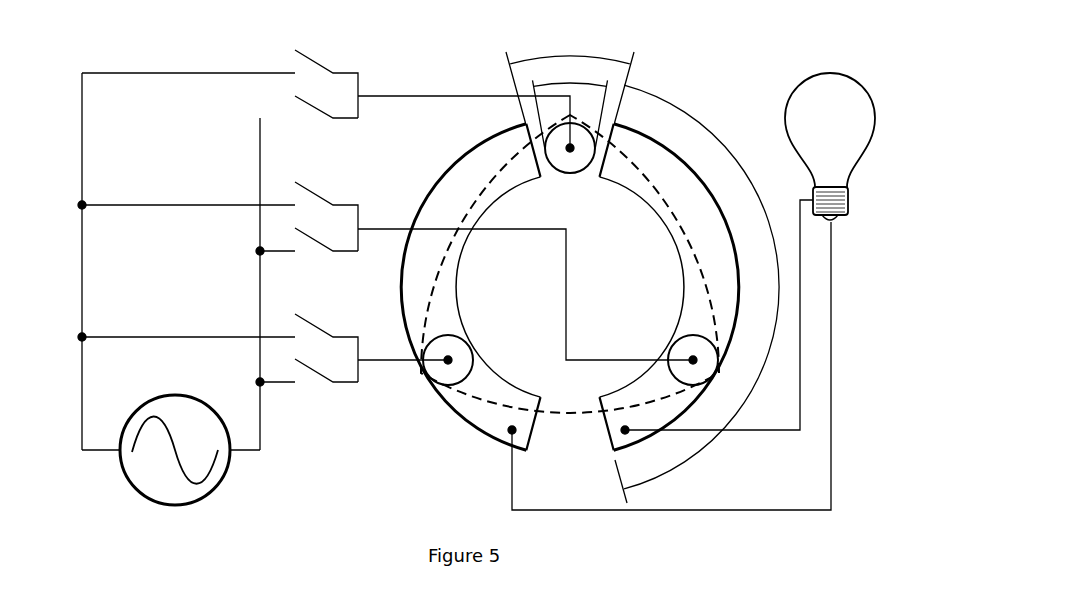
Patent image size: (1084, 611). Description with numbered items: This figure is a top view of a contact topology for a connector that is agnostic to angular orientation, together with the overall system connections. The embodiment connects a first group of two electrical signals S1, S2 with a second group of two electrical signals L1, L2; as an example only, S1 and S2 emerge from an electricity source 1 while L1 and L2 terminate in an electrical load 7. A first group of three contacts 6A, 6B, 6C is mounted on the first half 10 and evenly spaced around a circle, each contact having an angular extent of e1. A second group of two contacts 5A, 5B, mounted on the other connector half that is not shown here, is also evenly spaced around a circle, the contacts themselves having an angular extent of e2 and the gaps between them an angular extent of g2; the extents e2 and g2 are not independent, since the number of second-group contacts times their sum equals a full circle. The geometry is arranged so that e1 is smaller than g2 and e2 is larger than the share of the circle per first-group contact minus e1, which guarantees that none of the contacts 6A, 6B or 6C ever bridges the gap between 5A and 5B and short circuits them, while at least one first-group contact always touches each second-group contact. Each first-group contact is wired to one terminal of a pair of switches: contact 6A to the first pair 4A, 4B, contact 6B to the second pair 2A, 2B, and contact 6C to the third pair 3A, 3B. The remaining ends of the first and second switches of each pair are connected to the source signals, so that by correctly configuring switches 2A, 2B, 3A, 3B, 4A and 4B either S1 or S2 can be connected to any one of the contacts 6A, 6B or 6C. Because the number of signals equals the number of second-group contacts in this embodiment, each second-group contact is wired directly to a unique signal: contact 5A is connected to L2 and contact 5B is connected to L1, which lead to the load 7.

The electricity source 1 is at (220, 486).
The switch of the second pair 2A is at (326, 383).
The switch of the second pair 2B is at (371, 348).
The switch of the third pair 3A is at (326, 251).
The switch of the third pair 3B is at (494, 271).
The switch of the first pair 4A is at (326, 120).
The switch of the first pair 4B is at (432, 99).
The contact of the second group 5A is at (478, 165).
The contact of the second group 5B is at (613, 420).
The contact of the first group 6A is at (570, 163).
The contact of the first group 6B is at (462, 357).
The contact of the first group 6C is at (680, 348).
The electrical load 7 is at (835, 202).
The first half 10 is at (477, 203).
The electrical signal S1 is at (99, 468).
The electrical signal S2 is at (249, 468).
The electrical signal L1 is at (719, 315).
The electrical signal L2 is at (671, 366).
The angular extent of first-group contacts e1 is at (570, 104).
The angular extent of second-group contacts e2 is at (697, 293).
The angular extent of gaps between second-group contacts g2 is at (570, 76).